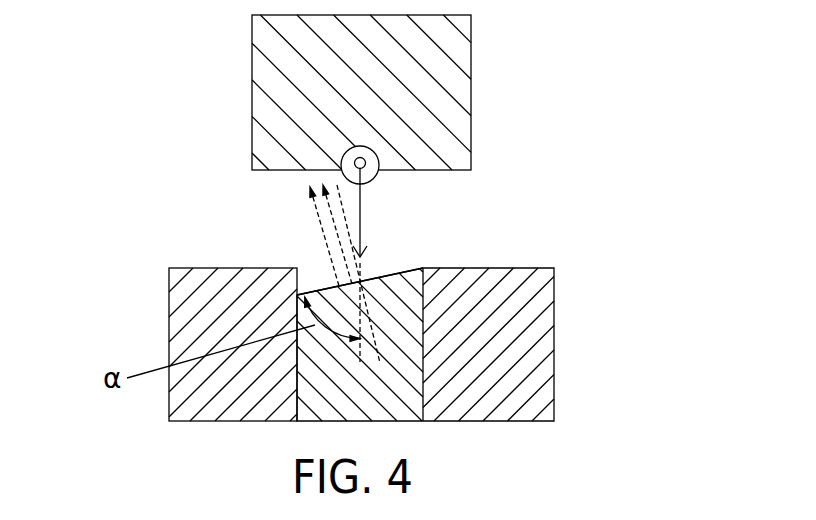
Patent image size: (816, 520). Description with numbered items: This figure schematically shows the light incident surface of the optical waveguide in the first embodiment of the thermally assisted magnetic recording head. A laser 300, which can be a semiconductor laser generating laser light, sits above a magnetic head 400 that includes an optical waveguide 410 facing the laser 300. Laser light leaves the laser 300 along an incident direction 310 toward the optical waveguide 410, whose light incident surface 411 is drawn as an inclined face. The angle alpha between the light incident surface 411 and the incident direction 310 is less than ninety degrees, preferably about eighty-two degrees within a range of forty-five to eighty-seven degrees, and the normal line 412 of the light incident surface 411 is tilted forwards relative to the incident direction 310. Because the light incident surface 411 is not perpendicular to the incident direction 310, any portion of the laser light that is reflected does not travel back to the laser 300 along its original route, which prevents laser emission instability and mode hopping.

The laser 300 is at (453, 90).
The incident direction 310 is at (360, 228).
The magnetic head 400 is at (183, 297).
The optical waveguide 410 is at (402, 338).
The light incident surface 411 is at (326, 289).
The normal line 412 is at (342, 205).